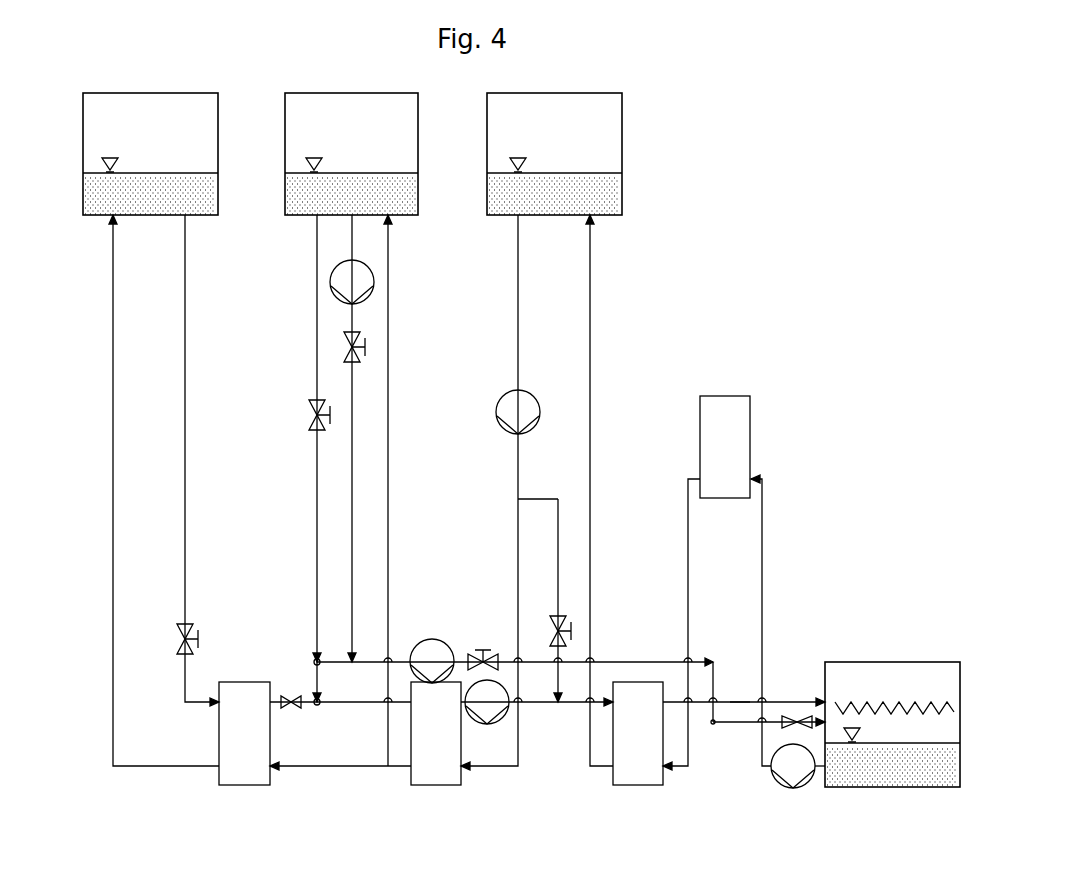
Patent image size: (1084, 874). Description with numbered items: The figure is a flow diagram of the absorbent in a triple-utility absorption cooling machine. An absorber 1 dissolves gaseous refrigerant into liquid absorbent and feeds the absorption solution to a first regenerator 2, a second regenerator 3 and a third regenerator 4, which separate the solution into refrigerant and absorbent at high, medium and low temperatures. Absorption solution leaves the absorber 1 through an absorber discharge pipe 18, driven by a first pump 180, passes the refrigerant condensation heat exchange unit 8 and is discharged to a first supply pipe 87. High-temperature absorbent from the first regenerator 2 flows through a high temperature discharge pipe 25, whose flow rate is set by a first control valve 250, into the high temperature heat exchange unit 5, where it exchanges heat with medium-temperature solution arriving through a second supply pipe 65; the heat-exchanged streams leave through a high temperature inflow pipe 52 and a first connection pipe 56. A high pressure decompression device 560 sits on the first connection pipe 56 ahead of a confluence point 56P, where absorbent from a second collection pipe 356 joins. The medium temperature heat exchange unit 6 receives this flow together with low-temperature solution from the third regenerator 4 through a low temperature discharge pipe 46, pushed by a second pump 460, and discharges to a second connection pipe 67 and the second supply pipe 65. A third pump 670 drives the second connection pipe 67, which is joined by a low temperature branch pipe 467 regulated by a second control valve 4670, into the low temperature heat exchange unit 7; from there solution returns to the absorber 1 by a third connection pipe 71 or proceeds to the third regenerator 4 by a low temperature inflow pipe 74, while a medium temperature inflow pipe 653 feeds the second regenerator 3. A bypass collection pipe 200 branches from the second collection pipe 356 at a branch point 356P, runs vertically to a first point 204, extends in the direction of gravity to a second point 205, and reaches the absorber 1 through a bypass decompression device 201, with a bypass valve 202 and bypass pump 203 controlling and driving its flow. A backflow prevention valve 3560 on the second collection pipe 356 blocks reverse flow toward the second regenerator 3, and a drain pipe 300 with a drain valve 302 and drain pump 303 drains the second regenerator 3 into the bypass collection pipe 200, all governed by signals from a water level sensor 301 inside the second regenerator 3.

The absorber 1 is at (906, 787).
The first regenerator 2 is at (150, 215).
The second regenerator 3 is at (288, 215).
The third regenerator 4 is at (557, 215).
The high temperature heat exchange unit 5 is at (245, 787).
The medium temperature heat exchange unit 6 is at (435, 787).
The low temperature heat exchange unit 7 is at (640, 787).
The refrigerant condensation heat exchange unit 8 is at (728, 396).
The absorber discharge pipe 18 is at (762, 634).
The high temperature discharge pipe 25 is at (185, 483).
The low temperature discharge pipe 46 is at (518, 468).
The high temperature inflow pipe 52 is at (113, 483).
The first connection pipe 56 is at (355, 704).
The confluence point 56P is at (317, 705).
The second supply pipe 65 is at (330, 768).
The second connection pipe 67 is at (540, 705).
The third connection pipe 71 is at (740, 700).
The low temperature inflow pipe 74 is at (590, 420).
The first supply pipe 87 is at (688, 530).
The first pump 180 is at (800, 788).
The bypass collection pipe 200 is at (400, 660).
The bypass decompression device 201 is at (790, 726).
The bypass valve 202 is at (486, 650).
The bypass pump 203 is at (442, 645).
The first point 204 is at (713, 660).
The second point 205 is at (713, 725).
The first control valve 250 is at (190, 626).
The drain pipe 300 is at (352, 398).
The water level sensor 301 is at (316, 160).
The drain valve 302 is at (360, 338).
The drain pump 303 is at (374, 278).
The second collection pipe 356 is at (317, 368).
The branch point 356P is at (316, 660).
The backflow prevention valve 3560 is at (310, 408).
The second pump 460 is at (524, 393).
The low temperature branch pipe 467 is at (558, 540).
The second control valve 4670 is at (565, 627).
The high pressure decompression device 560 is at (290, 696).
The medium temperature inflow pipe 653 is at (388, 520).
The third pump 670 is at (490, 724).